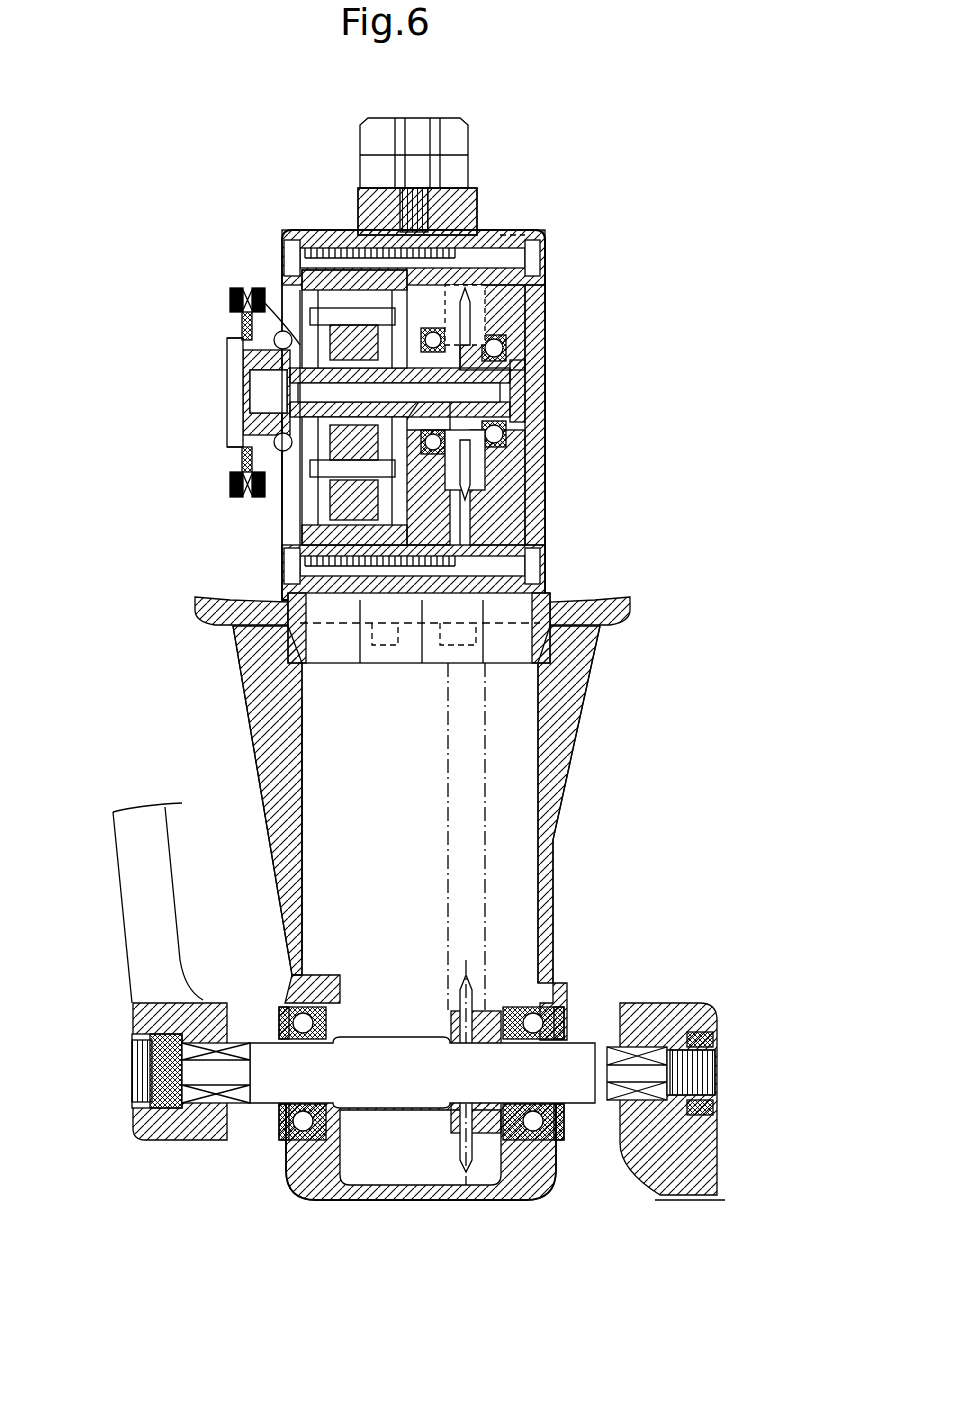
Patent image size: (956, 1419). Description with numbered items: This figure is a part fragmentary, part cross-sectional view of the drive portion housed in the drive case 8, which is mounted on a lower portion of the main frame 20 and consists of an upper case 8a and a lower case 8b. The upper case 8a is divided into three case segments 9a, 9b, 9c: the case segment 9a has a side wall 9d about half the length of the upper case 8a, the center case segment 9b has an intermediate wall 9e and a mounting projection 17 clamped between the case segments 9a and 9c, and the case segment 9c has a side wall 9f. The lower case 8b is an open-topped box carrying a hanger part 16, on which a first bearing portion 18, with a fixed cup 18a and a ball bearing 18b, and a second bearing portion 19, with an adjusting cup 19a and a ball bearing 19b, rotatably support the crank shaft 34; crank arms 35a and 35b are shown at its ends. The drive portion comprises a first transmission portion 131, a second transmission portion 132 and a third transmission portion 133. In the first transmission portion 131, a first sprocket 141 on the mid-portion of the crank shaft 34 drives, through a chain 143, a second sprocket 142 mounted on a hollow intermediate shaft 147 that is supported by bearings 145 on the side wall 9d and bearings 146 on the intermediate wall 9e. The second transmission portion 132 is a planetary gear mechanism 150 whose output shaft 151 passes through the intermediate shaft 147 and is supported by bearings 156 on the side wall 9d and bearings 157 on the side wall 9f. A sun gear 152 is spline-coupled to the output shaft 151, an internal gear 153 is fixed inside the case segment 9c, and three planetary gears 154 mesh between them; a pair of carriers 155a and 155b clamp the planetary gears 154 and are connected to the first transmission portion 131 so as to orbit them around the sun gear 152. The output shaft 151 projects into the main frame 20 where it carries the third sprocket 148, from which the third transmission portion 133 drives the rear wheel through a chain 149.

The drive case 8 is at (598, 579).
The upper case 8a is at (553, 483).
The lower case 8b is at (573, 714).
The case segment 9a is at (522, 230).
The center case segment 9b is at (420, 222).
The case segment 9c is at (328, 240).
The side wall 9d is at (547, 307).
The intermediate wall 9e is at (500, 528).
The side wall 9f is at (283, 500).
The hanger part 16 is at (537, 1180).
The mounting projection 17 is at (462, 152).
The first bearing portion 18 is at (277, 905).
The fixed cup 18a is at (280, 1020).
The ball bearing 18b is at (305, 1013).
The second bearing portion 19 is at (662, 905).
The adjusting cup 19a is at (533, 1022).
The ball bearing 19b is at (528, 1012).
The main frame 20 is at (632, 612).
The crank shaft 34 is at (395, 1045).
The right crank arm 35a is at (663, 1010).
The left crank arm 35b is at (160, 870).
The first transmission portion 131 is at (587, 833).
The second transmission portion 132 is at (555, 247).
The third transmission portion 133 is at (193, 332).
The first sprocket 141 is at (465, 1162).
The second sprocket 142 is at (470, 316).
The chain 143 is at (487, 800).
The bearings 145 is at (520, 457).
The bearings 146 is at (540, 412).
The hollow intermediate shaft 147 is at (505, 335).
The third sprocket 148 is at (228, 352).
The chain 149 is at (232, 293).
The planetary gear mechanism 150 is at (283, 332).
The output shaft 151 is at (230, 372).
The sun gear 152 is at (237, 427).
The internal gear 153 is at (310, 530).
The planetary gears 154 is at (230, 482).
The carrier 155a is at (280, 385).
The carrier 155b is at (470, 528).
The bearings 156 is at (540, 372).
The bearings 157 is at (280, 297).